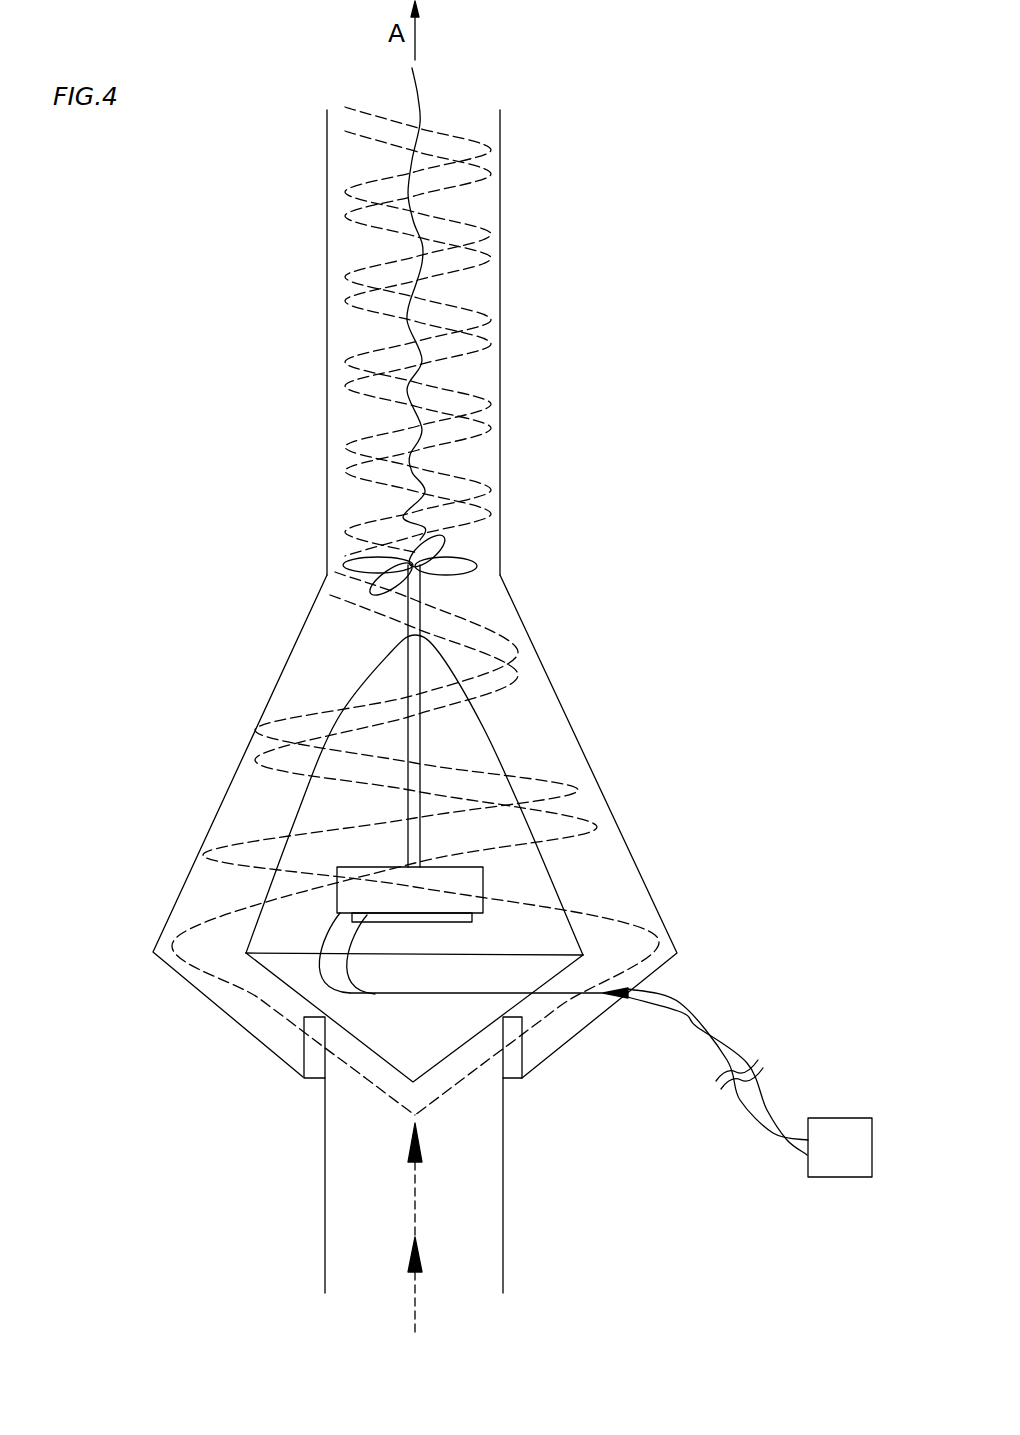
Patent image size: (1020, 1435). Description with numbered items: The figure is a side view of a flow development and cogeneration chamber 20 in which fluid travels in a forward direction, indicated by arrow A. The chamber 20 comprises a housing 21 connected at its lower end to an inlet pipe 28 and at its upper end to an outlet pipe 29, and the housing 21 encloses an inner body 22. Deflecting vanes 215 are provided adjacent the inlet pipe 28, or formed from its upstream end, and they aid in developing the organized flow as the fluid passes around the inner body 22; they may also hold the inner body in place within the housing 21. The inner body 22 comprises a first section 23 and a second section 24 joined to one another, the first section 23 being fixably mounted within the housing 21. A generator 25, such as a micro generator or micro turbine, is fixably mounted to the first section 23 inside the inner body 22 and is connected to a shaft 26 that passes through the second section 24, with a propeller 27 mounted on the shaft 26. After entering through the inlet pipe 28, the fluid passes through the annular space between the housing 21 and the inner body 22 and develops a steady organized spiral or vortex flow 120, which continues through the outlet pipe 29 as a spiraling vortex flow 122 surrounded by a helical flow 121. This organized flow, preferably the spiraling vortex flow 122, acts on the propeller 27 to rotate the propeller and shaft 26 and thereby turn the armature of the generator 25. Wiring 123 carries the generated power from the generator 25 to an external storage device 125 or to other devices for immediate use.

The flow development and cogeneration chamber 20 is at (674, 622).
The housing 21 is at (670, 937).
The inner body 22 is at (547, 726).
The first section 23 is at (317, 998).
The second section 24 is at (523, 870).
The generator 25 is at (357, 897).
The shaft 26 is at (421, 594).
The propeller 27 is at (343, 563).
The inlet pipe 28 is at (503, 1178).
The outlet pipe 29 is at (503, 357).
The organized flow 120 is at (483, 672).
The helical flow 121 is at (473, 160).
The spiraling vortex flow 122 is at (430, 286).
The wiring 123 is at (680, 1003).
The external storage device 125 is at (868, 1163).
The deflecting vanes 215 is at (315, 1080).